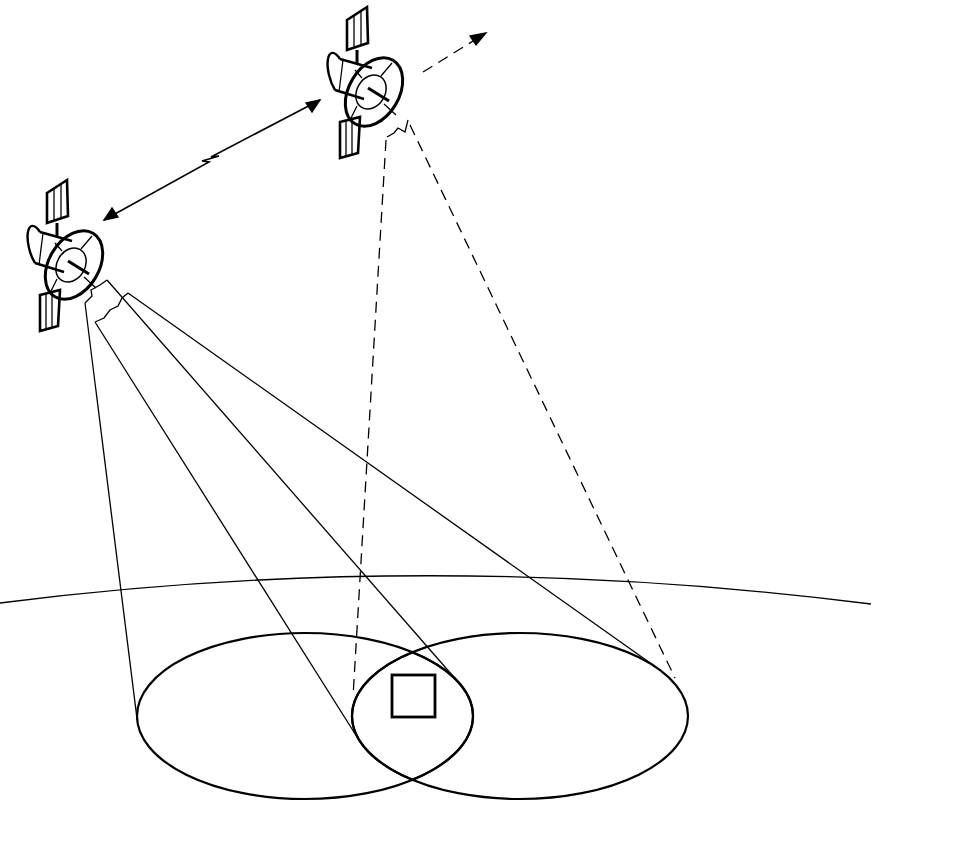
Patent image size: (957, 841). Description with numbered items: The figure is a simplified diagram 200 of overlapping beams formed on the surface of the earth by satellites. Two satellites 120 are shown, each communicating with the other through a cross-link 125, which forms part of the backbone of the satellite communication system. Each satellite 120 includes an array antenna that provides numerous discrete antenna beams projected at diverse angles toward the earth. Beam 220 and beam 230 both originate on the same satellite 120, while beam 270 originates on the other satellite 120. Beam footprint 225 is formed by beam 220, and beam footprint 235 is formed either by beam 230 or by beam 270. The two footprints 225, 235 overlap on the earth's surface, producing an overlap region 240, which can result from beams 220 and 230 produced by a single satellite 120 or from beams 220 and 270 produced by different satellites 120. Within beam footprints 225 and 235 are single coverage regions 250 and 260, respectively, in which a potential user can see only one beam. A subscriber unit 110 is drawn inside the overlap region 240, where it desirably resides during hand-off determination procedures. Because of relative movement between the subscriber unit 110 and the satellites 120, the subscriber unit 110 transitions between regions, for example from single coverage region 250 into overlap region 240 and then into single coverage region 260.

The subscriber unit 110 is at (413, 718).
The satellite 120 is at (368, 17).
The cross-link 125 is at (238, 141).
The simplified diagram of overlapping beams 200 is at (780, 404).
The beam 220 is at (99, 425).
The beam footprint 225 is at (187, 656).
The beam 230 is at (258, 382).
The beam footprint 235 is at (479, 634).
The overlap region 240 is at (464, 742).
The single coverage region 250 is at (305, 706).
The single coverage region 260 is at (520, 695).
The beam 270 is at (490, 289).